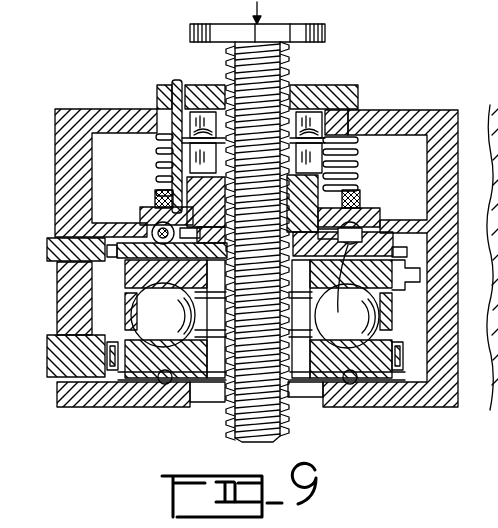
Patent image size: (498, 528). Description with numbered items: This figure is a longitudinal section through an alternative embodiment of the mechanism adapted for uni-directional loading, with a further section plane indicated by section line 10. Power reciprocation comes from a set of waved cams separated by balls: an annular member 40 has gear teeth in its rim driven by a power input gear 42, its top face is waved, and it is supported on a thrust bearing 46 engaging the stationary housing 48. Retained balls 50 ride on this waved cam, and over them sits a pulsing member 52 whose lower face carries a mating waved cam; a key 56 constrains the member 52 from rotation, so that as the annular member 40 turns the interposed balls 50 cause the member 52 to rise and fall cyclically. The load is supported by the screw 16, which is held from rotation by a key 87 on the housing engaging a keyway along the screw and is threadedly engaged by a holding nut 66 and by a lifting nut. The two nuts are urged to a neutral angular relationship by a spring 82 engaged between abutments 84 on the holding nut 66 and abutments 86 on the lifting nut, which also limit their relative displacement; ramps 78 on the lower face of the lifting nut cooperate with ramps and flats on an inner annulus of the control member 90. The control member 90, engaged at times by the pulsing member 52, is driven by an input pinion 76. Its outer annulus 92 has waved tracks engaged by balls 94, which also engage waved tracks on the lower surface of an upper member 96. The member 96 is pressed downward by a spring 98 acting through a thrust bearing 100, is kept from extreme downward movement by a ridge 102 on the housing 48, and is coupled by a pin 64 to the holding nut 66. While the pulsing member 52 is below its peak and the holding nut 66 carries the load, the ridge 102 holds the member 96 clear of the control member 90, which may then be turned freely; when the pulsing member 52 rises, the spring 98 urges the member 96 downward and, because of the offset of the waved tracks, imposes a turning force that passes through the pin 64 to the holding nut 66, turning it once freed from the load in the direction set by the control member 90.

The section line 10 is at (333, 64).
The screw 16 is at (228, 437).
The annular member 40 is at (138, 368).
The power input gear 42 is at (50, 378).
The thrust bearing 46 is at (352, 407).
The housing 48 is at (423, 407).
The balls 50 is at (163, 315).
The pulsing member 52 is at (125, 291).
The key 56 is at (402, 288).
The pin 64 is at (176, 80).
The holding nut 66 is at (348, 85).
The input pinion 76 is at (52, 256).
The ramps 78 is at (155, 192).
The spring 82 is at (357, 110).
The abutments 84 is at (266, 141).
The abutments 86 is at (160, 156).
The key 87 is at (290, 408).
The control input member 90 is at (395, 245).
The outer annulus 92 is at (362, 222).
The balls 94 is at (347, 296).
The upper member 96 is at (370, 210).
The spring 98 is at (360, 140).
The thrust bearing 100 is at (364, 205).
The ridge 102 is at (137, 224).